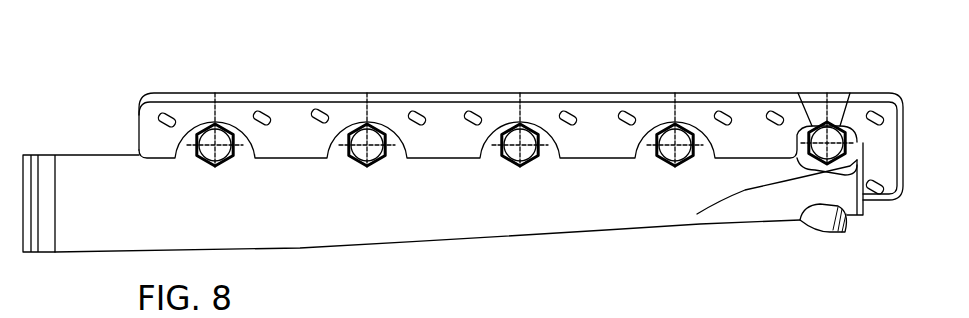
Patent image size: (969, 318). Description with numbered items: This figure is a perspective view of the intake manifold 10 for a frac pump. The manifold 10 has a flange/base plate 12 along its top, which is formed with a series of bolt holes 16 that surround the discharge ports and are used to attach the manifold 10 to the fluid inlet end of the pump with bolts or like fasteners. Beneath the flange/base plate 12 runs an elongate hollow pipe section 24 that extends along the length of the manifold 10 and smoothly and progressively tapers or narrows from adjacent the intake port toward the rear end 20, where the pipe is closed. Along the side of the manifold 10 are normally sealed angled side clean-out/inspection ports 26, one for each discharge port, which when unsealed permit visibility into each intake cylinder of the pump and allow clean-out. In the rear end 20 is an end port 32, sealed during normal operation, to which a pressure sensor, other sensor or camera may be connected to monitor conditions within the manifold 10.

The intake manifold 10 is at (85, 177).
The flange/base plate 12 is at (752, 112).
The bolt holes 16 is at (315, 113).
The rear end 20 is at (862, 213).
The elongate hollow pipe section 24 is at (550, 220).
The side clean-out/inspection ports 26 is at (663, 130).
The end port 32 is at (826, 220).